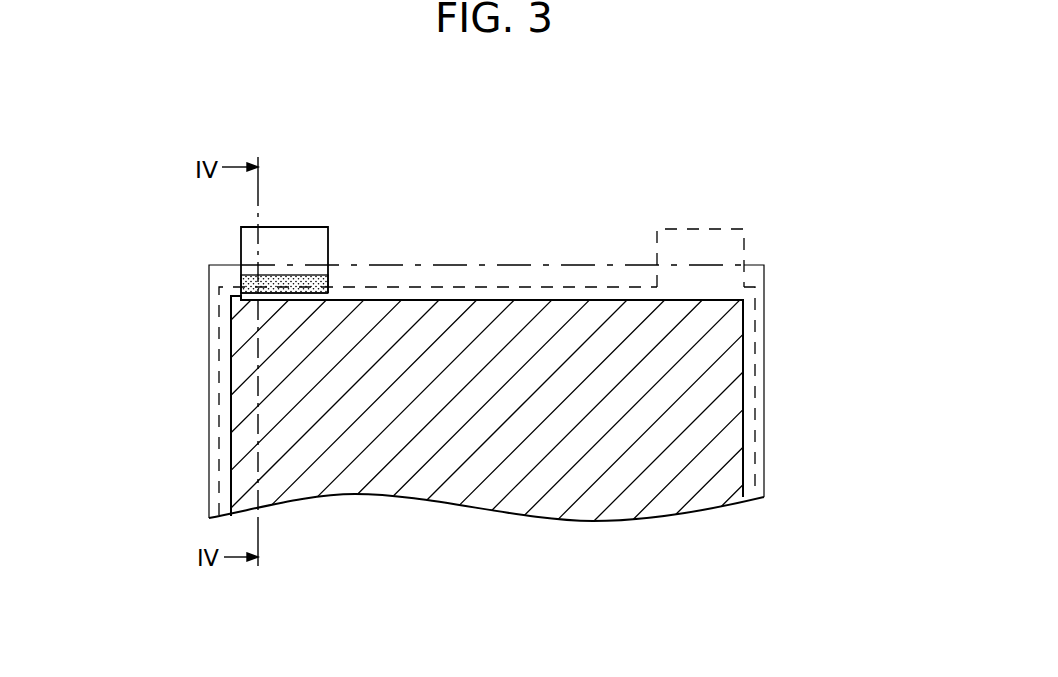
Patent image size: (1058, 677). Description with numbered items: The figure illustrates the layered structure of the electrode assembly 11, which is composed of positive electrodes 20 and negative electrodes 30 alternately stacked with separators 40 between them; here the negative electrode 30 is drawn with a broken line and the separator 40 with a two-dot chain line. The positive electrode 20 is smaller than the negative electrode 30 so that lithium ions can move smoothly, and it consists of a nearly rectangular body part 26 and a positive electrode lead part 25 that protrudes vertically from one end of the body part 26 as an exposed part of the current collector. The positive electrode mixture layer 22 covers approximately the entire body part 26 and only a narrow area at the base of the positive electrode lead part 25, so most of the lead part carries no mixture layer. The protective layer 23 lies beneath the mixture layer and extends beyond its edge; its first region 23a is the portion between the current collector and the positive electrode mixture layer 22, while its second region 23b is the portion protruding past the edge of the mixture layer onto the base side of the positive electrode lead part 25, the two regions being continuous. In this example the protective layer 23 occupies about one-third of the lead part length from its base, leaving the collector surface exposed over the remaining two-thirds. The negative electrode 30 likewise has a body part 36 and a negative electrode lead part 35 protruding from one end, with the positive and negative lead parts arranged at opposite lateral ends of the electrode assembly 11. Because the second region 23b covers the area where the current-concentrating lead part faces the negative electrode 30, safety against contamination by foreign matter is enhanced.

The electrode assembly 11 is at (763, 125).
The positive electrode 20 is at (452, 371).
The positive electrode mixture layer 22 is at (391, 494).
The protective layer 23 is at (327, 230).
The first region 23a is at (487, 497).
The second region 23b is at (305, 283).
The positive electrode lead part 25 is at (302, 236).
The body part 26 is at (236, 367).
The negative electrode 30 is at (542, 286).
The negative electrode lead part 35 is at (700, 234).
The body part 36 is at (755, 363).
The separator 40 is at (764, 278).